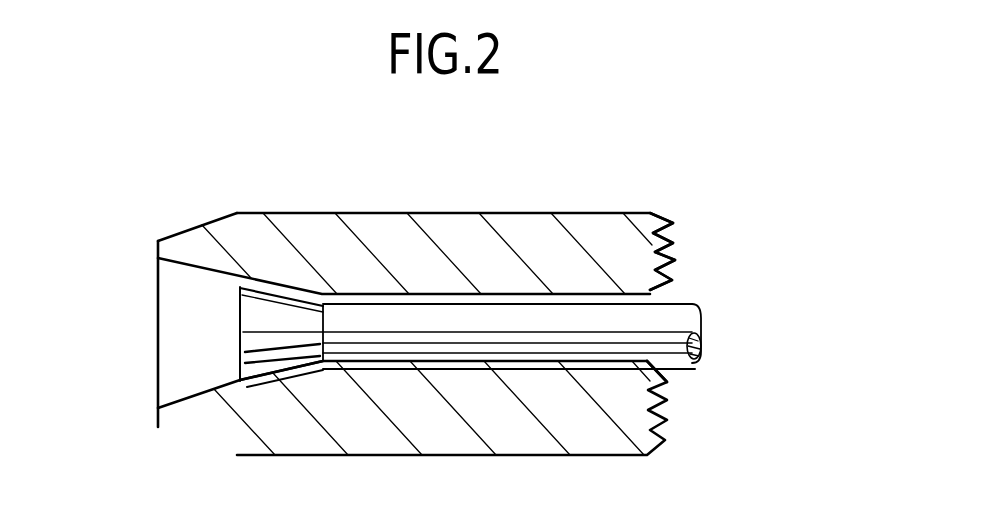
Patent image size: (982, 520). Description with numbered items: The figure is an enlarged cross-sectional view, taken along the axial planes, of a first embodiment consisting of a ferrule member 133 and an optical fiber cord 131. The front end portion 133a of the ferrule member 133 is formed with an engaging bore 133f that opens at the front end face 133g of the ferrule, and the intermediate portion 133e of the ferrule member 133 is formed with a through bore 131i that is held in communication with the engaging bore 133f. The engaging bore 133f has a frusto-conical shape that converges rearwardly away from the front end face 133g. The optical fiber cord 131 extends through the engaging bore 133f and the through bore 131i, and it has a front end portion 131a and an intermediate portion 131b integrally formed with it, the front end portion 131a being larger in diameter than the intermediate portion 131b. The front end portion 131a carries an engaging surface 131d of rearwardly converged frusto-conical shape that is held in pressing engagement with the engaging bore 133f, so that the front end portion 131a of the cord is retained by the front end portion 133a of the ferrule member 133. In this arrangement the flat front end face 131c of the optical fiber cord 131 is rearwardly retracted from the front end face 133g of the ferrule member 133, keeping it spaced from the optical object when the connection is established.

The optical fiber cord 131 is at (679, 302).
The front end portion 131a is at (238, 318).
The intermediate portion 131b is at (703, 345).
The front end face 131c is at (238, 310).
The engaging surface 131d is at (230, 378).
The fiber jacket 131i is at (668, 381).
The ferrule member 133 is at (570, 211).
The front end portion 133a is at (222, 214).
The intermediate portion 133e is at (636, 252).
The engaging bore 133f is at (277, 278).
The front end face 133g is at (158, 246).